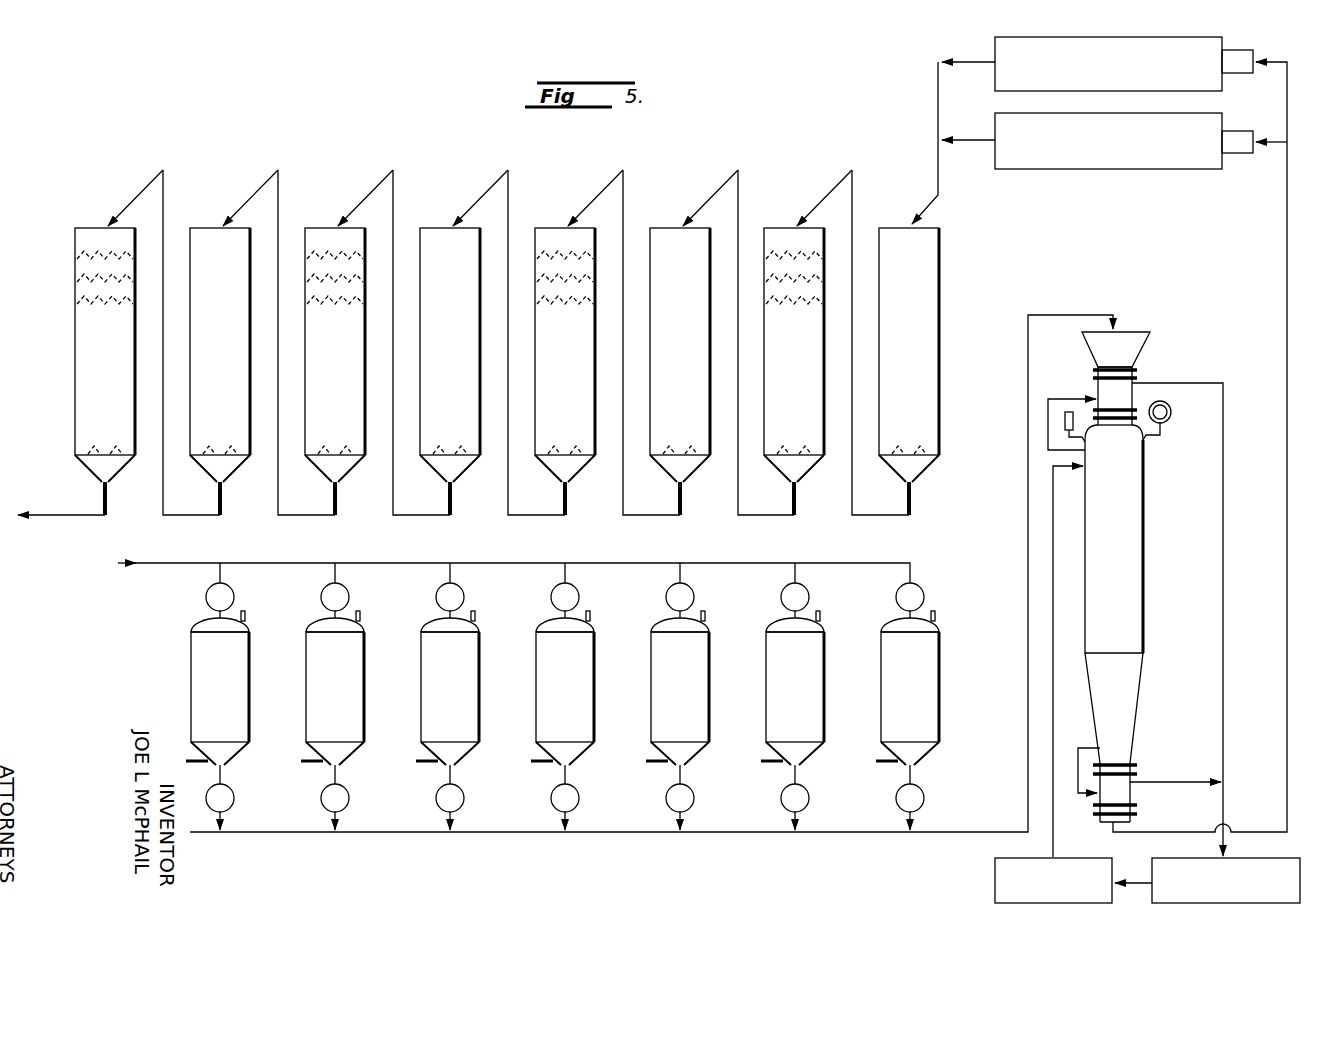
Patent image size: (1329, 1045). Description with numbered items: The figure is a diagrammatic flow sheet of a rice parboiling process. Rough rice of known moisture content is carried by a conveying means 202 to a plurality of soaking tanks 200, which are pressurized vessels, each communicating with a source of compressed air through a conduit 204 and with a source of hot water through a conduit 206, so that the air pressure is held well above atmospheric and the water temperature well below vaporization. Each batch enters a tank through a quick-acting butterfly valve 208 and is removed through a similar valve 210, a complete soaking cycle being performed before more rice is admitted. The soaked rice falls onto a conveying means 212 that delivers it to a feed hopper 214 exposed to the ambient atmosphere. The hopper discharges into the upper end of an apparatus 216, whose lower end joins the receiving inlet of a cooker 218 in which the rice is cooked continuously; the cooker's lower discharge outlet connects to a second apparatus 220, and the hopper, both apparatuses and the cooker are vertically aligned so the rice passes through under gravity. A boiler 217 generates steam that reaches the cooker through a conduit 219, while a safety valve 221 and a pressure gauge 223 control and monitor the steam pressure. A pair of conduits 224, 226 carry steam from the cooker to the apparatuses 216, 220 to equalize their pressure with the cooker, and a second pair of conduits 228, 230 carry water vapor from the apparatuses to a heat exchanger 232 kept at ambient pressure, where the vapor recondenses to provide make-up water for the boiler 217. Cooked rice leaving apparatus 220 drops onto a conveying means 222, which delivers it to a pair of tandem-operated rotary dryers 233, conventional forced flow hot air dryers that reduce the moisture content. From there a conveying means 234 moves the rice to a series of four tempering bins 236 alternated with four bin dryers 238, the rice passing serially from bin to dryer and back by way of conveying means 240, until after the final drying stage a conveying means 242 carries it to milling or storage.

The soaking tanks 200 is at (306, 696).
The conveying means 202 is at (185, 564).
The conduit 204 is at (245, 616).
The conduit 206 is at (200, 758).
The valve 208 is at (234, 592).
The valve 210 is at (321, 803).
The conveying means 212 is at (553, 834).
The feed hopper 214 is at (1140, 355).
The apparatus 216 is at (1098, 390).
The boiler 217 is at (993, 857).
The cooker 218 is at (1130, 541).
The conduit 219 is at (1053, 538).
The apparatus 220 is at (1128, 795).
The safety valve 221 is at (1065, 418).
The conveying means 222 is at (1287, 268).
The pressure gauge 223 is at (1170, 415).
The conduit 224 is at (1048, 432).
The conduit 226 is at (1078, 768).
The conduit 228 is at (1223, 467).
The conduit 230 is at (1154, 768).
The heat exchanger 232 is at (1156, 857).
The rotary dryers 233 is at (1010, 120).
The conveying means 234 is at (938, 100).
The tempering bins 236 is at (200, 227).
The bin dryers 238 is at (85, 227).
The conveying means 240 is at (159, 498).
The conveying means 242 is at (95, 515).